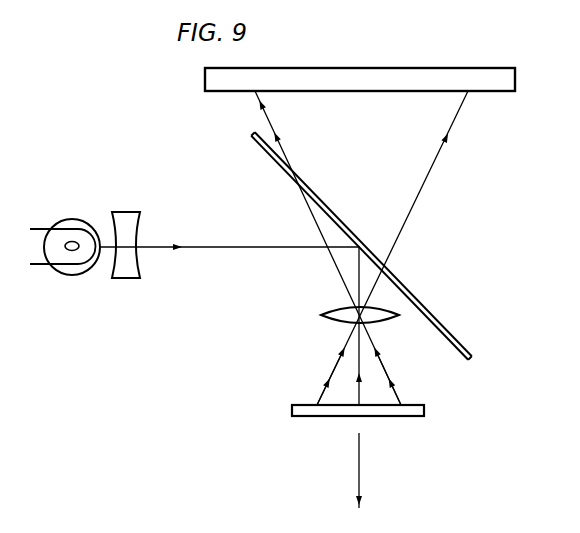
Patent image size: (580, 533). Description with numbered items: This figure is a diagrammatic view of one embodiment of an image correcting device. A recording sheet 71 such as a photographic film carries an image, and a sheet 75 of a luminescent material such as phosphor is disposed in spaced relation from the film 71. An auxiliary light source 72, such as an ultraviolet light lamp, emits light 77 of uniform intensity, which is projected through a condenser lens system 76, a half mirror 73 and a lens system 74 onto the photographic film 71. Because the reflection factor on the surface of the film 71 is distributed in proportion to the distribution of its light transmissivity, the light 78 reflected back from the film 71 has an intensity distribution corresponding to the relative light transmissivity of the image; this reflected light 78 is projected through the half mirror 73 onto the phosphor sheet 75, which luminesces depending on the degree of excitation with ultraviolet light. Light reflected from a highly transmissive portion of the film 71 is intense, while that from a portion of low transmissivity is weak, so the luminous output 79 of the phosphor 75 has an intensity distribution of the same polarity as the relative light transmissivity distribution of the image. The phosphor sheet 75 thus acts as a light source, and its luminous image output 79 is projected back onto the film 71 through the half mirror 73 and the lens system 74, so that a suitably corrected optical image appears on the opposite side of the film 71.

The recording sheet 71 is at (330, 417).
The auxiliary light source 72 is at (72, 276).
The half mirror 73 is at (472, 357).
The lens system 74 is at (331, 313).
The sheet of luminescent material 75 is at (489, 68).
The condenser lens system 76 is at (131, 279).
The light 77 is at (240, 246).
The reflected light 78 is at (264, 117).
The luminous output 79 is at (331, 371).